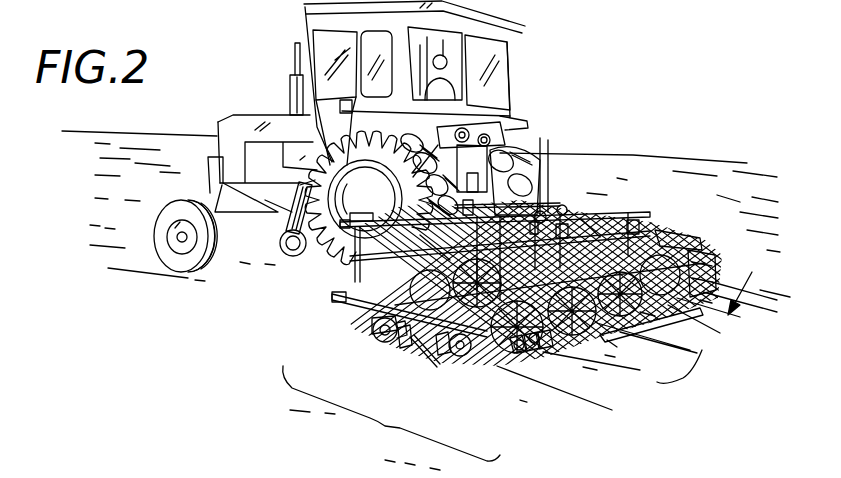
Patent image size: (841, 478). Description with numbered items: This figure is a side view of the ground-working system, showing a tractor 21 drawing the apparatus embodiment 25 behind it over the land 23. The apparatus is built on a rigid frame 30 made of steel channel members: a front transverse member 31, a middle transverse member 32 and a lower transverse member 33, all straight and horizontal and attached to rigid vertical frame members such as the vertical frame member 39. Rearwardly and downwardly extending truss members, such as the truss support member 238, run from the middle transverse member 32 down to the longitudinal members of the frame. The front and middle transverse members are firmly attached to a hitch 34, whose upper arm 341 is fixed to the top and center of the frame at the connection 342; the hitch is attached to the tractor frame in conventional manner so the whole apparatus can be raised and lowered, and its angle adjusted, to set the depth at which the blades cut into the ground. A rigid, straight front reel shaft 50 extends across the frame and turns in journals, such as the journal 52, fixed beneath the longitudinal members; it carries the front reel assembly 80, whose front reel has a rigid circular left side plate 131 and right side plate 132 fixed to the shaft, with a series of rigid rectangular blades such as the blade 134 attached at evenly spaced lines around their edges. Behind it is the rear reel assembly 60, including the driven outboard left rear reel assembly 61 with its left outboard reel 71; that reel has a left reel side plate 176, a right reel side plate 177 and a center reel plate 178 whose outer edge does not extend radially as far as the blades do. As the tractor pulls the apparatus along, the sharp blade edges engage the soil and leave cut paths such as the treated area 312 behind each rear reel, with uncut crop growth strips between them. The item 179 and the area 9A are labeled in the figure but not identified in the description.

The tractor 21 is at (510, 63).
The land 23 is at (762, 272).
The apparatus embodiment 25 is at (391, 413).
The frame 30 is at (644, 215).
The front transverse member 31 is at (328, 247).
The middle transverse member 32 is at (342, 268).
The lower transverse member 33 is at (333, 297).
The hitch 34 is at (490, 200).
The vertical frame member 39 is at (583, 215).
The front reel shaft 50 is at (370, 330).
The journal 52 is at (378, 343).
The rear reel assembly 60 is at (730, 254).
The outboard left rear reel assembly 61 is at (464, 356).
The left outboard reel 71 is at (520, 343).
The front reel assembly 80 is at (698, 240).
The left side plate 131 is at (415, 340).
The right side plate 132 is at (440, 348).
The blade 134 is at (402, 335).
The left reel side plate 176 is at (515, 343).
The right reel side plate 177 is at (540, 343).
The center reel plate 178 is at (530, 343).
The tine 179 is at (533, 340).
The truss support member 238 is at (680, 236).
The treated area 312 is at (636, 357).
The hitch arm 341 is at (541, 213).
The connection 342 is at (562, 205).
The worked soil strip 9A is at (683, 375).